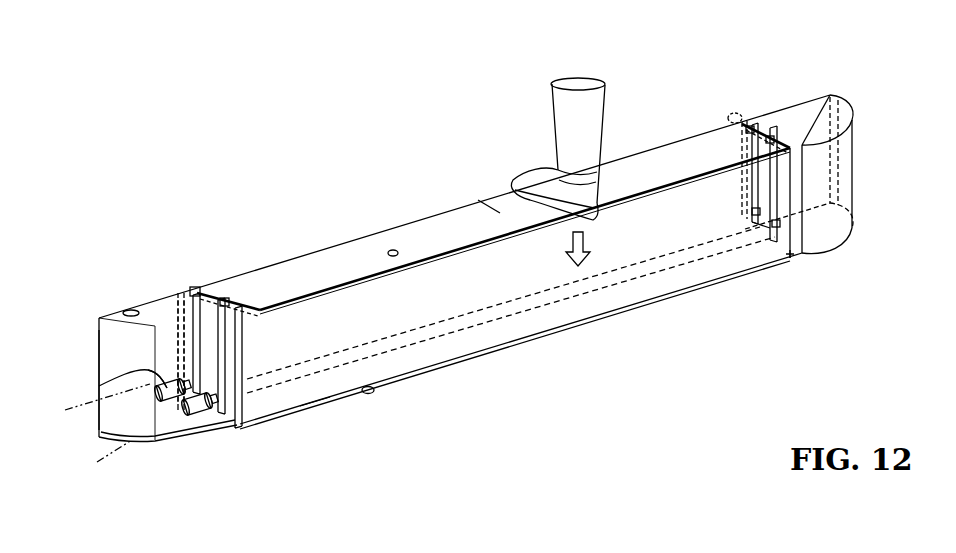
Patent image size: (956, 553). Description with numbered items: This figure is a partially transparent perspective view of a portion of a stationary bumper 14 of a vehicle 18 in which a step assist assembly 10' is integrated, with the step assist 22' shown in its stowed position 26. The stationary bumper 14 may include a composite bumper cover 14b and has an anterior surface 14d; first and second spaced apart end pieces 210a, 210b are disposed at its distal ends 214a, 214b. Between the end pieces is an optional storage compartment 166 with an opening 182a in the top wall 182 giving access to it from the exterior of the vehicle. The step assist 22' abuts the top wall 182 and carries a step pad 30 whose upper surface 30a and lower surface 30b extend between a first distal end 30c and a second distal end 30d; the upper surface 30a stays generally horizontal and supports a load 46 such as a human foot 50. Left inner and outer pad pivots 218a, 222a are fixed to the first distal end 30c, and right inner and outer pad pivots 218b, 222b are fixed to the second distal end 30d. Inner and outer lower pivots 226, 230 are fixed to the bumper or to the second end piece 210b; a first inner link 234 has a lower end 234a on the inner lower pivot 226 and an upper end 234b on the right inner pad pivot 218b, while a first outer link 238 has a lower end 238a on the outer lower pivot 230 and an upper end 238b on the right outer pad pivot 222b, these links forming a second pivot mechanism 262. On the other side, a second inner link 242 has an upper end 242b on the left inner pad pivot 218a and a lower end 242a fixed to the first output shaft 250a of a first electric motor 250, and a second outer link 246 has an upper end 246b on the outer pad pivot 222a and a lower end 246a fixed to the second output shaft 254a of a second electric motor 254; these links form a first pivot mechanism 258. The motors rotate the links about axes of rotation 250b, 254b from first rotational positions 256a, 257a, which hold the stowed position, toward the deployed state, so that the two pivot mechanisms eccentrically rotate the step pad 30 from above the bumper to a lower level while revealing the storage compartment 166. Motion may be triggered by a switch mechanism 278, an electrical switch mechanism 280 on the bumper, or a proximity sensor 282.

The step assist assembly 10' is at (227, 223).
The stationary bumper 14 is at (464, 301).
The composite bumper cover 14b is at (464, 301).
The anterior surface 14d is at (384, 380).
The vehicle 18 is at (148, 190).
The step assist 22' is at (500, 190).
The stowed position 26 is at (457, 204).
The step pad 30 is at (525, 231).
The upper surface 30a is at (418, 245).
The lower surface 30b is at (500, 213).
The first distal end 30c is at (225, 297).
The second distal end 30d is at (748, 125).
The load 46 is at (573, 242).
The human foot 50 is at (548, 127).
The storage compartment 166 is at (467, 333).
The top wall 182 is at (679, 96).
The opening 182a is at (710, 140).
The first spaced apart end piece 210a is at (149, 445).
The second spaced apart end piece 210b is at (821, 92).
The distal end 214a is at (103, 366).
The distal end 214b is at (853, 173).
The left inner pad pivot 218a is at (196, 286).
The right inner pad pivot 218b is at (760, 130).
The left outer pad pivot 222a is at (242, 297).
The right outer pad pivot 222b is at (773, 128).
The inner lower pivot 226 is at (770, 230).
The outer lower pivot 230 is at (787, 253).
The first inner link 234 is at (753, 178).
The lower end 234a is at (763, 213).
The upper end 234b is at (762, 128).
The first outer link 238 is at (780, 176).
The lower end 238a is at (780, 230).
The upper end 238b is at (800, 123).
The second inner link 242 is at (100, 341).
The lower end 242a is at (353, 347).
The upper end 242b is at (193, 343).
The second outer link 246 is at (280, 356).
The lower end 246a is at (313, 393).
The upper end 246b is at (240, 307).
The first electric motor 250 is at (99, 386).
The first output shaft 250a is at (172, 383).
The axis of rotation 250b is at (81, 405).
The second electric motor 254 is at (212, 418).
The second output shaft 254a is at (240, 420).
The axis of rotation 254b is at (88, 463).
The first rotational position 256a is at (190, 347).
The first rotational position 257a is at (225, 376).
The first pivot mechanism 258 is at (262, 277).
The second pivot mechanism 262 is at (707, 248).
The switch mechanism 278 is at (393, 252).
The electrical switch mechanism 280 is at (124, 312).
The proximity sensor 282 is at (369, 391).